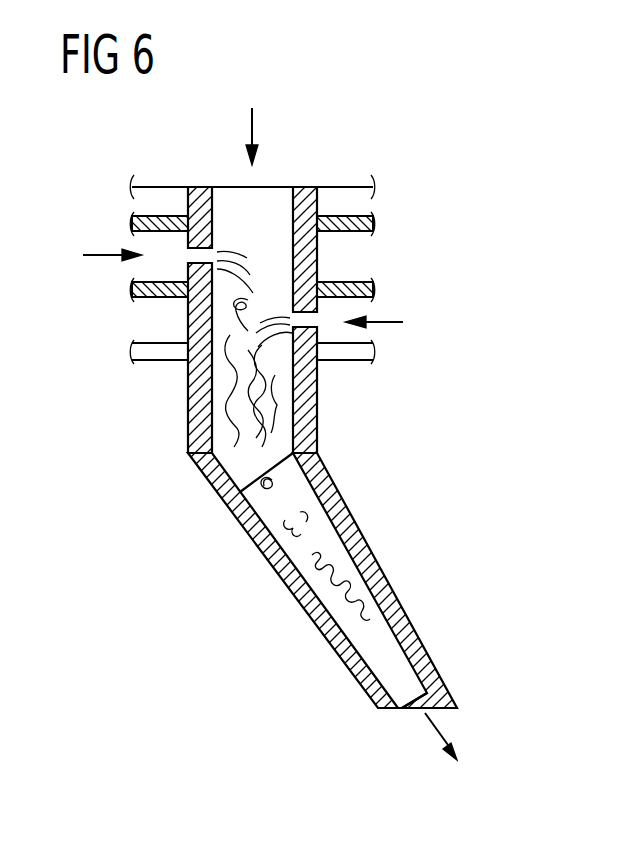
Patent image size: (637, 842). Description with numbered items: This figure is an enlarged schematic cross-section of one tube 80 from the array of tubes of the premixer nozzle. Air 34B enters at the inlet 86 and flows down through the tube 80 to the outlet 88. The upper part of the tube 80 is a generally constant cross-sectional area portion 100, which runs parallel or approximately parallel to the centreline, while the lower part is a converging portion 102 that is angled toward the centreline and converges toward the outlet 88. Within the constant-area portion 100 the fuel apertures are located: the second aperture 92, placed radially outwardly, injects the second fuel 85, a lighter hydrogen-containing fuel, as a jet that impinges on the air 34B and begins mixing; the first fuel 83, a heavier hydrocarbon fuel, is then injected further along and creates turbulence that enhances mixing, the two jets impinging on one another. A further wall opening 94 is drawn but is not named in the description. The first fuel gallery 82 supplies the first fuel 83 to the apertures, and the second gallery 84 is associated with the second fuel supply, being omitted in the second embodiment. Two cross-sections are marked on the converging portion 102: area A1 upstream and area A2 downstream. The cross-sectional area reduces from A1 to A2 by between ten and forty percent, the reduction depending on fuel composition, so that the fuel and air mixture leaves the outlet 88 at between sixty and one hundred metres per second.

The tube 80 is at (366, 138).
The inlet 86 is at (230, 185).
The air 34B is at (252, 130).
The second gallery 84 is at (155, 248).
The second fuel 85 is at (100, 255).
The second aperture 92 is at (188, 257).
The generally constant cross-sectional area portion 100 is at (187, 387).
The first fuel gallery 82 is at (357, 306).
The first fuel 83 is at (383, 322).
The second wall opening 94 is at (317, 318).
The converging portion 102 is at (283, 580).
The cross-sectional area A1 is at (257, 491).
The cross-sectional area A2 is at (419, 682).
The outlet 88 is at (416, 710).